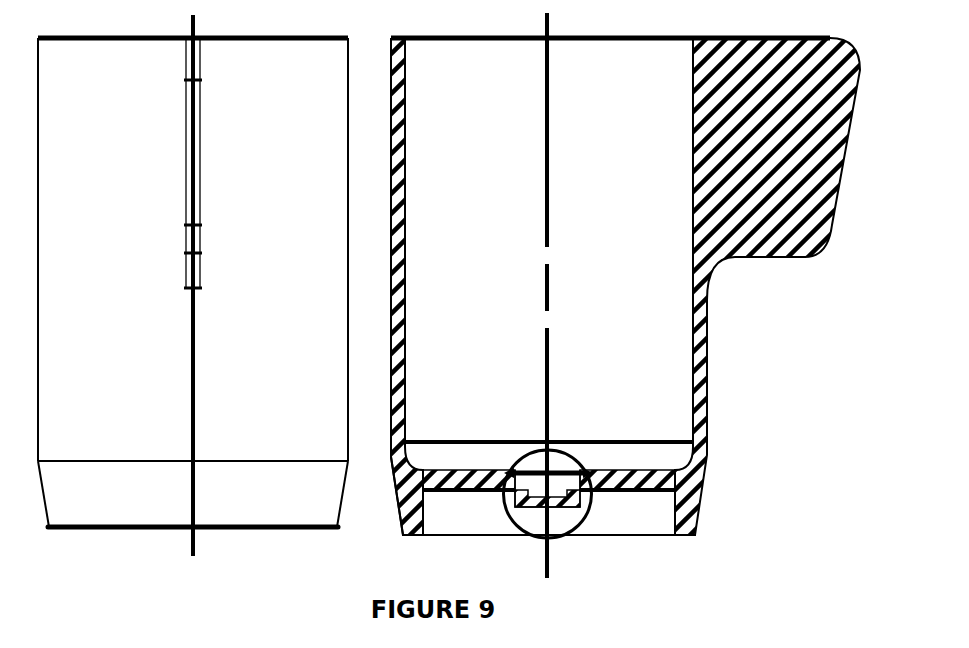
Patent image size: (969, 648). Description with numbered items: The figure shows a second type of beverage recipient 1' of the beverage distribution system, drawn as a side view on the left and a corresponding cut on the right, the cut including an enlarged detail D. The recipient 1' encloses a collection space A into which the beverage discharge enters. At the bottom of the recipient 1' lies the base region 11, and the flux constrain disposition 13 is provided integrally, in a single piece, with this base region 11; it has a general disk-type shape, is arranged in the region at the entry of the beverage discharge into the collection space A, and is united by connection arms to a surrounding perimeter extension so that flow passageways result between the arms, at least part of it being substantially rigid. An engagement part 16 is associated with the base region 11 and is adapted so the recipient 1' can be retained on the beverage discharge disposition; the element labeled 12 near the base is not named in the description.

The beverage recipient 1' is at (484, 290).
The base region 11 is at (484, 287).
The bottom rim / base 12 is at (549, 559).
The flux constrain disposition 13 is at (567, 465).
The engagement part 16 is at (389, 496).
The collection space A is at (549, 240).
The detail D is at (546, 515).